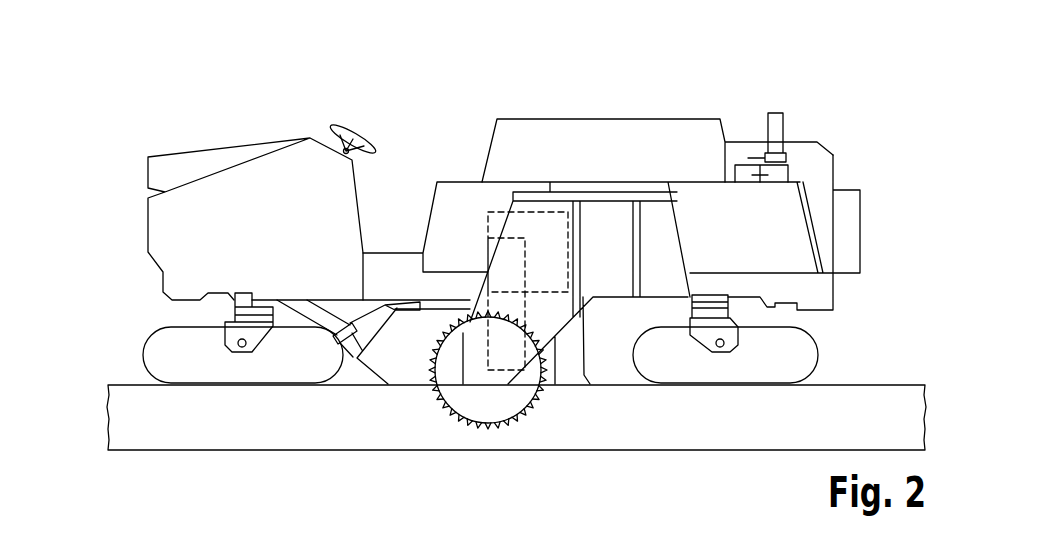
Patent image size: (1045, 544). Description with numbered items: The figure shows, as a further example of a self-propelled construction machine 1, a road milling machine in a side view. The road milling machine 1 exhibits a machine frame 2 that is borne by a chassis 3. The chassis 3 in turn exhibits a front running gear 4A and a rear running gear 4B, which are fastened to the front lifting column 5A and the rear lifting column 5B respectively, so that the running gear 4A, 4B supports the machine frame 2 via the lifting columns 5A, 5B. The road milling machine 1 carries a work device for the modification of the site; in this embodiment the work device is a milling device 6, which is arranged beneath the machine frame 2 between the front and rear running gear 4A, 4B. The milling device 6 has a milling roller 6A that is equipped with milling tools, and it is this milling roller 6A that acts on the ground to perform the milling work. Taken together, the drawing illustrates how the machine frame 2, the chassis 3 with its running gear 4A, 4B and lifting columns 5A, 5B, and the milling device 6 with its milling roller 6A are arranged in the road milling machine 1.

The self-propelled construction machine 1 is at (478, 98).
The machine frame 2 is at (740, 108).
The chassis 3 is at (130, 312).
The front running gear 4A is at (150, 358).
The rear running gear 4B is at (808, 358).
The front lifting column 5A is at (247, 300).
The rear lifting column 5B is at (708, 300).
The milling device 6 is at (473, 399).
The milling roller 6A is at (528, 408).